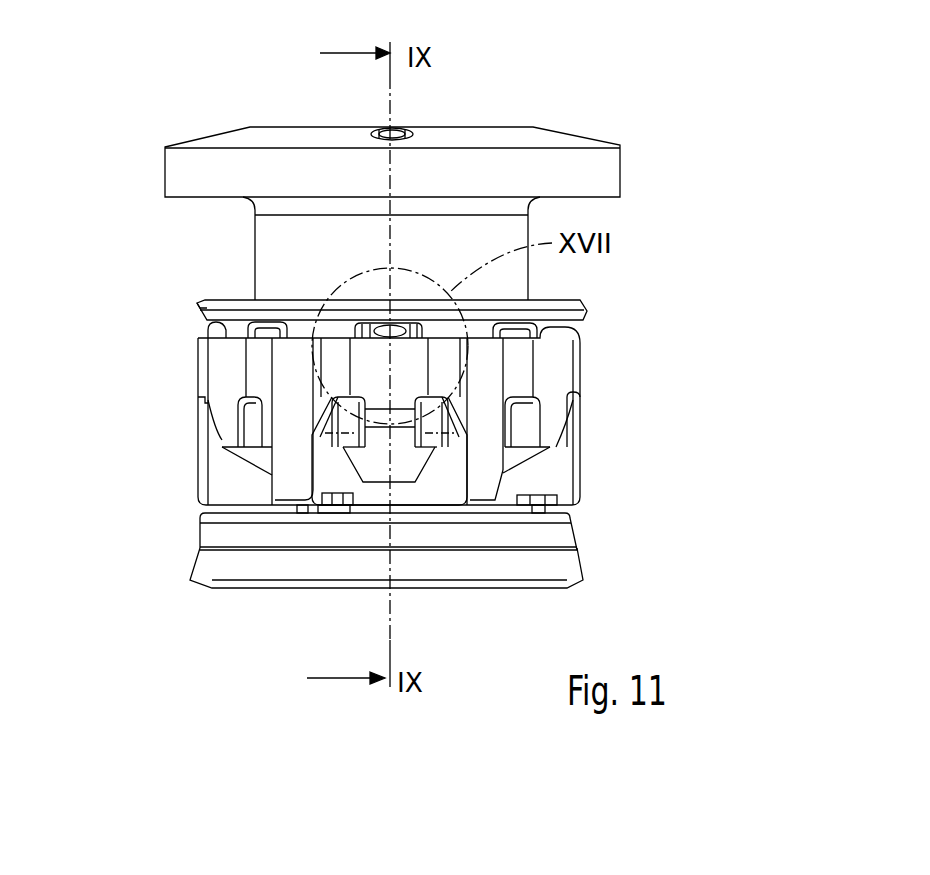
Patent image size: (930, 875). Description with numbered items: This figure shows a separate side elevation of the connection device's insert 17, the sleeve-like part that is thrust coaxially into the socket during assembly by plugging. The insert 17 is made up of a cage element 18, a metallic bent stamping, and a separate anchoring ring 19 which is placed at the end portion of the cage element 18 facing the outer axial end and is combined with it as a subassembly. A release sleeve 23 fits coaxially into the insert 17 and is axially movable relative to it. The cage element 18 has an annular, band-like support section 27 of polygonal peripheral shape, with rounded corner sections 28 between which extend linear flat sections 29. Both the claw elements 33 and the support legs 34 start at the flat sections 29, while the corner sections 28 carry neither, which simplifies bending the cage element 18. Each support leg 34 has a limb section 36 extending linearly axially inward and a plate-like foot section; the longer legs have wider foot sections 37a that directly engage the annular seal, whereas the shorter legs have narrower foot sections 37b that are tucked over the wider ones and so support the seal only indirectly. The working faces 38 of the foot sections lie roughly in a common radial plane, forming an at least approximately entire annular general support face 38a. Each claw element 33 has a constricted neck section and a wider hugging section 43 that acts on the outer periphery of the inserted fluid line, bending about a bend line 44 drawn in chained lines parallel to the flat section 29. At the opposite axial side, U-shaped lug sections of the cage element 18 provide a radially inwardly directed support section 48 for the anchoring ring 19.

The insert 17 is at (570, 378).
The cage element 18 is at (190, 366).
The anchoring ring 19 is at (550, 299).
The release sleeve 23 is at (496, 133).
The support section 27 is at (370, 362).
The corner sections 28 is at (253, 350).
The flat sections 29 is at (287, 362).
The claw elements 33 is at (527, 457).
The support legs 34 is at (200, 460).
The limb section 36 is at (577, 413).
The foot section 37a is at (437, 513).
The foot section 37b is at (328, 505).
The working faces 38 is at (542, 517).
The general support face 38a is at (494, 526).
The hugging section 43 is at (377, 480).
The bend line 44 is at (397, 440).
The support section 48 is at (270, 330).